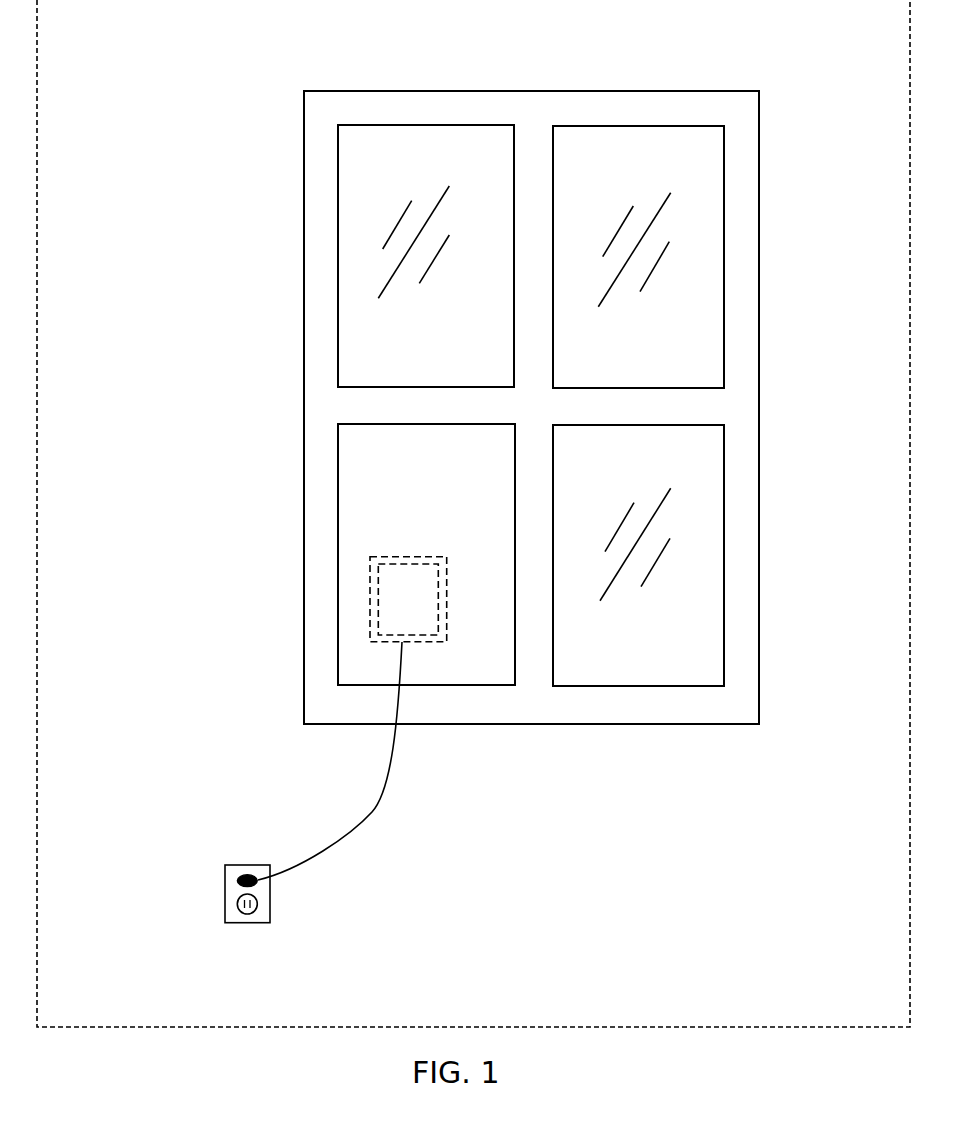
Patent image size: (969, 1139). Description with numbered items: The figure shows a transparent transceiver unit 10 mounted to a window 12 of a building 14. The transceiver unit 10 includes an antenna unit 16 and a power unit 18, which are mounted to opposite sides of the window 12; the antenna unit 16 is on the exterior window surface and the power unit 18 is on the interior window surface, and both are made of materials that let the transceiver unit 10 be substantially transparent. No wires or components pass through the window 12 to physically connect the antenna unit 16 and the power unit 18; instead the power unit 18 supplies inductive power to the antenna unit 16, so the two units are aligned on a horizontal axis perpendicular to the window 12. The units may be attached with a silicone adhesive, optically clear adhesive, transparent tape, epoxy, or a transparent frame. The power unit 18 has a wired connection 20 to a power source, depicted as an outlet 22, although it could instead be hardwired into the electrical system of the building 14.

The transceiver unit 10 is at (374, 572).
The window 12 is at (398, 109).
The building 14 is at (196, 270).
The antenna unit 16 is at (363, 554).
The power unit 18 is at (447, 617).
The wired connection 20 is at (373, 812).
The outlet 22 is at (233, 872).